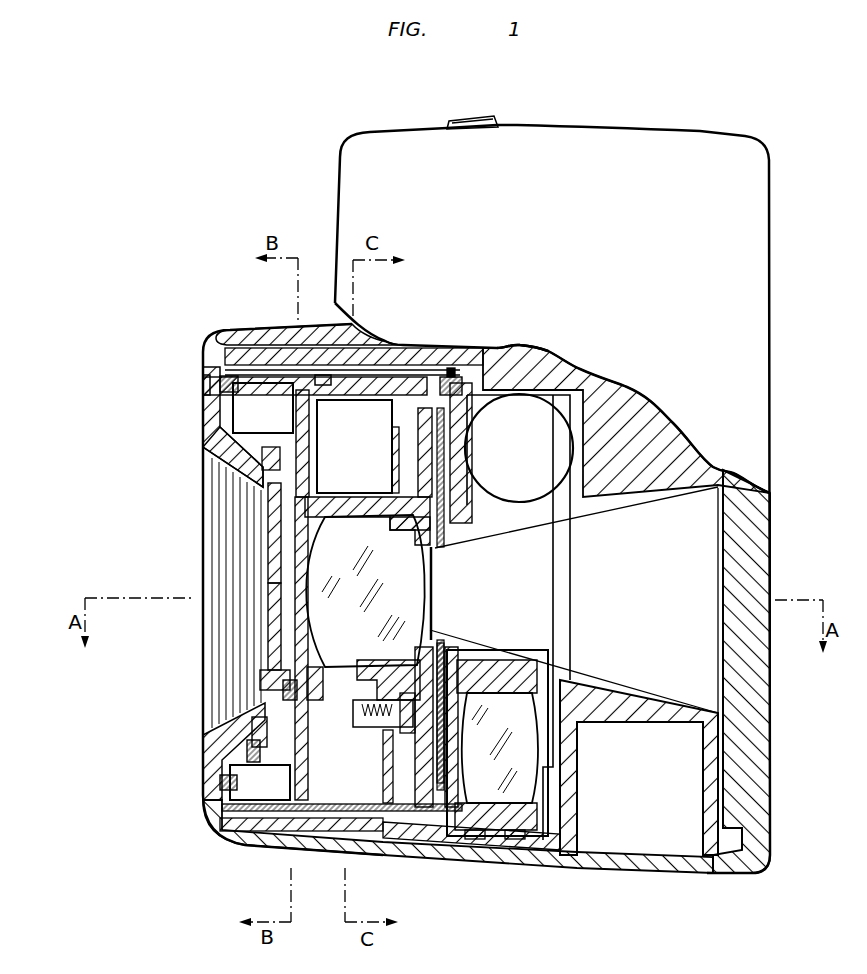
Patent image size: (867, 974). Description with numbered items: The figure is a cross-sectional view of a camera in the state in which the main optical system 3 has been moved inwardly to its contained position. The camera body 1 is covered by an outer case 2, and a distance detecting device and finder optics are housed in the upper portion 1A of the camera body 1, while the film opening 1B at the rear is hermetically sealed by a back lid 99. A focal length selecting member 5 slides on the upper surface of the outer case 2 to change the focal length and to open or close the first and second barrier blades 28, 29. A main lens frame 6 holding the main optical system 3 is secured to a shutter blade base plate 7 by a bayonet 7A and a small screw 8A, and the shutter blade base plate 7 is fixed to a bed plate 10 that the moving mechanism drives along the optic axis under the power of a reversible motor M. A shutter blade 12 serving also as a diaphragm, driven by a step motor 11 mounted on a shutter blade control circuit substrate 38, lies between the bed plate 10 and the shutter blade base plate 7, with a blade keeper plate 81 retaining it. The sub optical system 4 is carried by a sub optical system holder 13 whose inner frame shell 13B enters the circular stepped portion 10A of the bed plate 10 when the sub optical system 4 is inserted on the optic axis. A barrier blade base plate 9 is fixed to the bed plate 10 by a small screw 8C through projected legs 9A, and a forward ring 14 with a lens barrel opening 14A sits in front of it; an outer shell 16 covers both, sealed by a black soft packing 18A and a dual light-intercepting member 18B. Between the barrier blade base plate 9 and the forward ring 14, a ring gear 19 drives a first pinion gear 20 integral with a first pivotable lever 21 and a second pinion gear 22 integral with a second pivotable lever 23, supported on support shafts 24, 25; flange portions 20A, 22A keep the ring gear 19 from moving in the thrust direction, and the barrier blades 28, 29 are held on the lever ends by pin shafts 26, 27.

The camera body 1 is at (621, 390).
The upper portion of the camera body 1A is at (517, 348).
The film opening 1B is at (714, 488).
The outer case 2 is at (226, 328).
The main optical system 3 is at (312, 578).
The sub optical system 4 is at (526, 782).
The focal length selecting member 5 is at (468, 116).
The main lens frame 6 is at (348, 662).
The shutter blade base plate 7 is at (429, 805).
The bayonet 7A is at (400, 527).
The small screw 8A is at (345, 722).
The small screw 8C is at (442, 377).
The barrier blade base plate 9 is at (311, 453).
The projected legs 9A is at (400, 377).
The bed plate 10 is at (478, 500).
The circular stepped portion 10A is at (446, 553).
The step motor 11 is at (361, 405).
The shutter blade 12 is at (442, 580).
The sub optical system holder 13 is at (513, 653).
The inner frame shell 13B is at (457, 800).
The forward ring 14 is at (203, 420).
The lens barrel opening 14A is at (262, 500).
The outer shell 16 is at (323, 846).
The black soft packing 18A is at (320, 378).
The dual light-intercepting member 18B is at (210, 334).
The ring gear 19 is at (252, 723).
The first pinion gear 20 is at (203, 440).
The flange portion 20A is at (312, 428).
The first pivotable lever 21 is at (313, 472).
The second pinion gear 22 is at (244, 742).
The flange portion 22A is at (268, 770).
The second pivotable lever 23 is at (282, 692).
The support shaft 24 is at (220, 386).
The support shaft 25 is at (218, 782).
The pin shaft 26 is at (312, 520).
The pin shaft 27 is at (323, 666).
The first barrier blade 28 is at (272, 547).
The second barrier blade 29 is at (272, 607).
The shutter blade control circuit substrate 38 is at (402, 810).
The blade keeper plate 81 is at (453, 457).
The back lid 99 is at (768, 528).
The reversible motor M is at (569, 447).